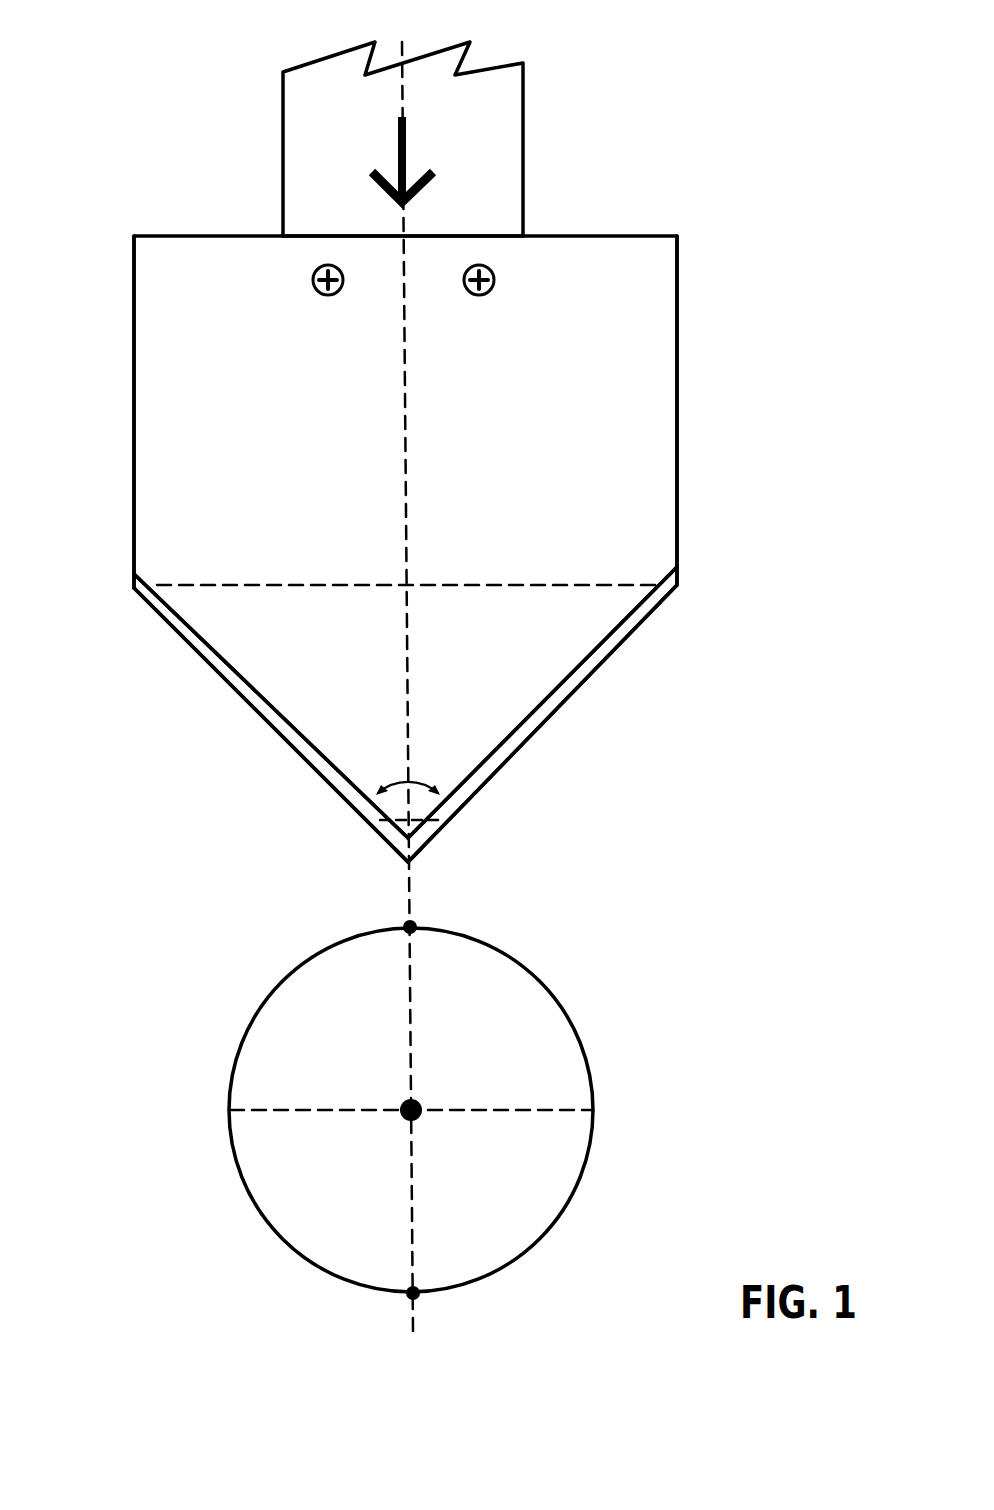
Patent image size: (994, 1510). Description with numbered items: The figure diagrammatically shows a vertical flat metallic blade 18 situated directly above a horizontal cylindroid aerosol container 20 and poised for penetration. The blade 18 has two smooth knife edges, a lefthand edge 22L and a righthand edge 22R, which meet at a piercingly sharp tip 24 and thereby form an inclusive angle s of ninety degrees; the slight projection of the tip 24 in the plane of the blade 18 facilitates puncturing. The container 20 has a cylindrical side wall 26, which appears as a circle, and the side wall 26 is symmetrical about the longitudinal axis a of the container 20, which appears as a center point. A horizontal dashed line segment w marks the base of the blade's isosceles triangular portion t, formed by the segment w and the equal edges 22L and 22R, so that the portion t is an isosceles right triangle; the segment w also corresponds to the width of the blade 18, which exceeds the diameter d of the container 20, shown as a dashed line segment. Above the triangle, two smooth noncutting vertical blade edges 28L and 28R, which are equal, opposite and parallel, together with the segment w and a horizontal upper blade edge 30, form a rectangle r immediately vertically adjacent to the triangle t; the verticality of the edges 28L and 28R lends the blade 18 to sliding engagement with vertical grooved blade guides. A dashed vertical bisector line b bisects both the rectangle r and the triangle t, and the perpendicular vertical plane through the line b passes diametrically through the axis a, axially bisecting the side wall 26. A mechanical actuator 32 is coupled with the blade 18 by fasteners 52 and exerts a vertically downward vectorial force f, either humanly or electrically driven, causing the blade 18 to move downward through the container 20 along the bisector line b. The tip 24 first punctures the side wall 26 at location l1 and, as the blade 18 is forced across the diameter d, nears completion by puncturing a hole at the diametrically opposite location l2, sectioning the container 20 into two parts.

The vertical flat metallic blade 18 is at (710, 276).
The horizontal cylindroid aerosol container 20 is at (438, 1110).
The lefthand knife edge 22L is at (276, 725).
The righthand knife edge 22R is at (542, 722).
The tip 24 is at (403, 866).
The cylindrical side wall 26 is at (241, 1033).
The lefthand noncutting vertical blade edge 28L is at (131, 457).
The righthand noncutting vertical blade edge 28R is at (682, 456).
The horizontal upper blade edge 30 is at (562, 240).
The mechanical actuator 32 is at (523, 177).
The fasteners 52 is at (309, 280).
The vertically downward vectorial force f is at (402, 159).
The rectangle r is at (458, 417).
The vertical bisector line b is at (407, 530).
The horizontal dashed line segment w is at (515, 578).
The isosceles triangular portion t is at (459, 665).
The inclusive angle s is at (408, 801).
The location l1 is at (413, 922).
The longitudinal axis a is at (423, 1123).
The diameter d is at (498, 1103).
The location l2 is at (417, 1300).